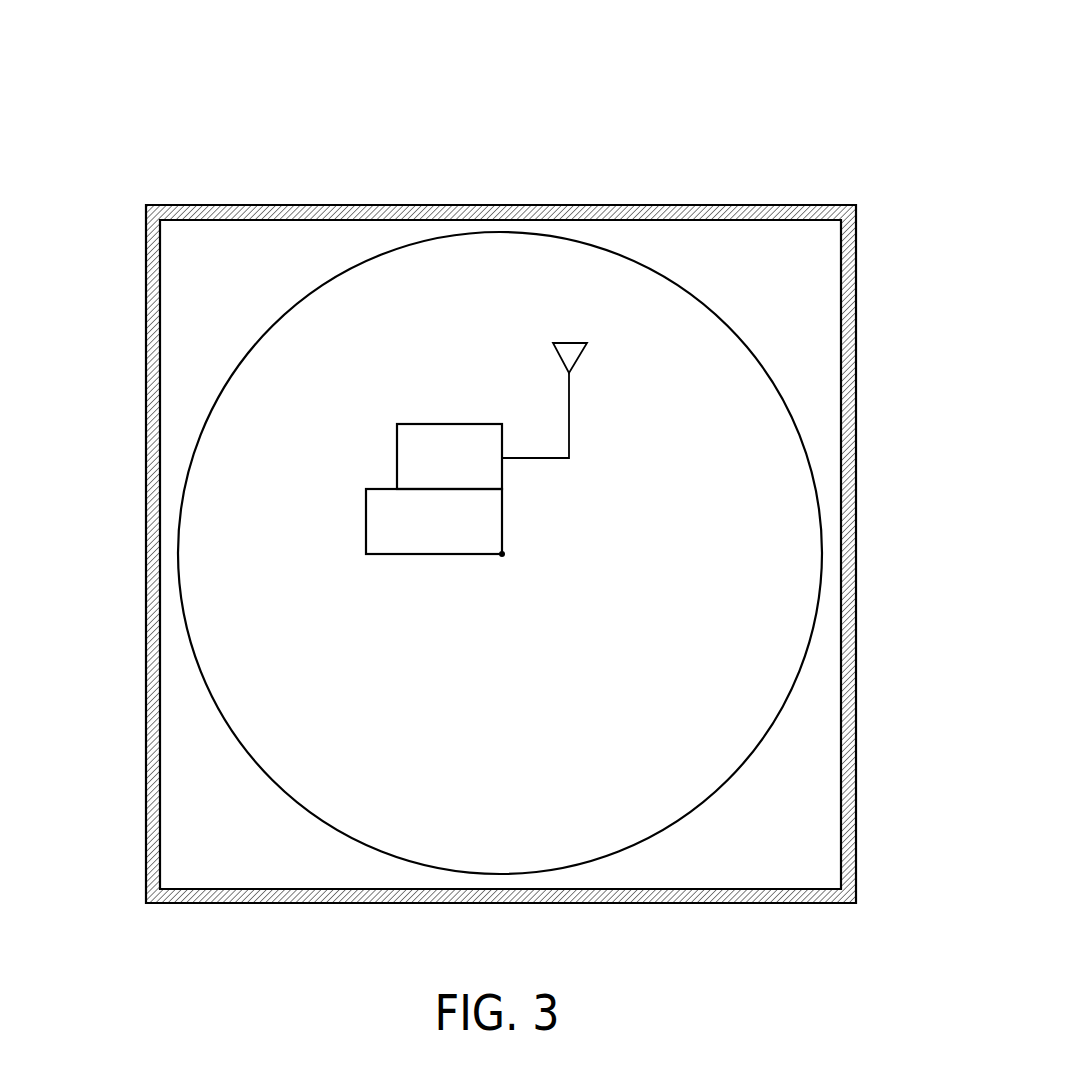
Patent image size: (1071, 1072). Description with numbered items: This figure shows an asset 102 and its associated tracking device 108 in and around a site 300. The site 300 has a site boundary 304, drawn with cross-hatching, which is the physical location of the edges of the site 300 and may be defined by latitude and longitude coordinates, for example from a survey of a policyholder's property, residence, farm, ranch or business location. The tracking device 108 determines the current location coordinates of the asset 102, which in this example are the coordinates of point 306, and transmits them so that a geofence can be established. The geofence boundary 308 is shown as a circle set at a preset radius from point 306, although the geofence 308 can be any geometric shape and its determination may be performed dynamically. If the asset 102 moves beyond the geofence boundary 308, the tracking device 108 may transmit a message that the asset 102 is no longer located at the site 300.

The site 300 is at (785, 125).
The site boundary 304 is at (279, 205).
The geofence boundary 308 is at (752, 355).
The tracking device 108 is at (397, 450).
The asset 102 is at (366, 522).
The point 306 is at (502, 554).